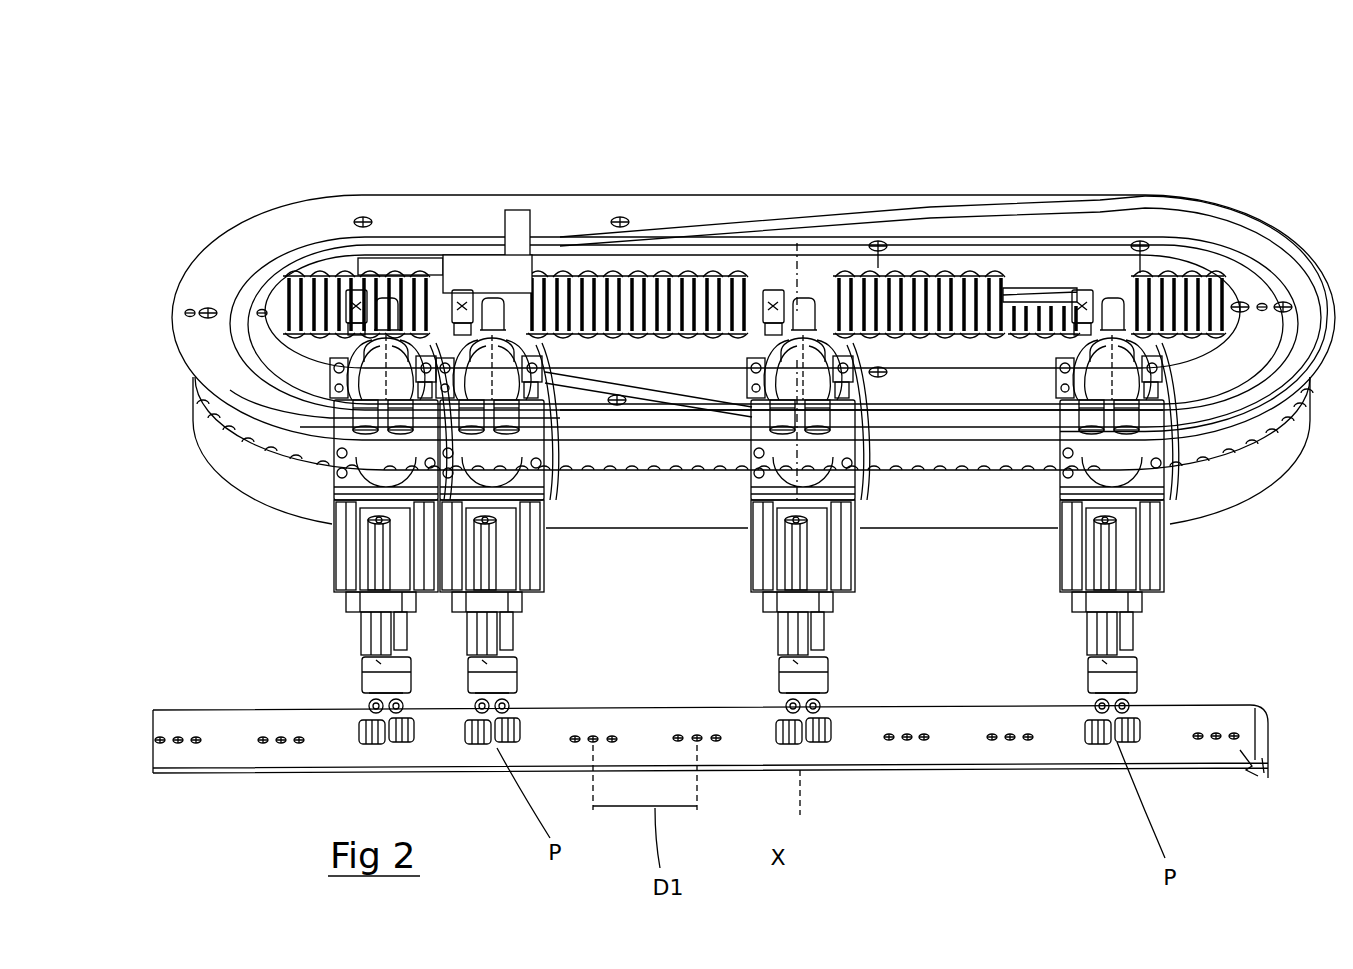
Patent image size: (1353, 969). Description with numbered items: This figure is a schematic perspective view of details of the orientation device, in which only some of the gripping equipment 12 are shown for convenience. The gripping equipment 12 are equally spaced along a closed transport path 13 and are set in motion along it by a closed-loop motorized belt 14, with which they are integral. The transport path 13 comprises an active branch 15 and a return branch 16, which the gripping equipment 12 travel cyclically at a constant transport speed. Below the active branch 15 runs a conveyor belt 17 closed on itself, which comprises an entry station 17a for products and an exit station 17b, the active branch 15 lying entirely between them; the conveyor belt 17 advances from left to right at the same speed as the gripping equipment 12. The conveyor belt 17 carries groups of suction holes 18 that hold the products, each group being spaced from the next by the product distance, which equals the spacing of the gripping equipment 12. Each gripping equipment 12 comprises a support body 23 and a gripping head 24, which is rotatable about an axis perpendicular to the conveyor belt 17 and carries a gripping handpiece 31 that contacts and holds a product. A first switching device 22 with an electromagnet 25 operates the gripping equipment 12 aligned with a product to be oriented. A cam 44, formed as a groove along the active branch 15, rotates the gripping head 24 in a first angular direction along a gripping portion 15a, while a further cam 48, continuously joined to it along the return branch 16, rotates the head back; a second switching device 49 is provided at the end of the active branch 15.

The gripping equipment 12 is at (1172, 325).
The transport path 13 is at (218, 270).
The belt 14 is at (212, 452).
The active branch 15 is at (594, 418).
The gripping portion 15a is at (672, 408).
The return branch 16 is at (788, 200).
The conveyor belt 17 is at (208, 712).
The entry station 17a is at (178, 762).
The exit station 17b is at (1250, 756).
The groups of suction holes 18 is at (1217, 725).
The first switching device 22 is at (474, 258).
The support body 23 is at (358, 535).
The gripping head 24 is at (372, 632).
The electromagnet 25 is at (515, 282).
The gripping handpiece 31 is at (372, 688).
The cam 44 is at (655, 383).
The further cam 48 is at (888, 215).
The second switching device 49 is at (1047, 284).